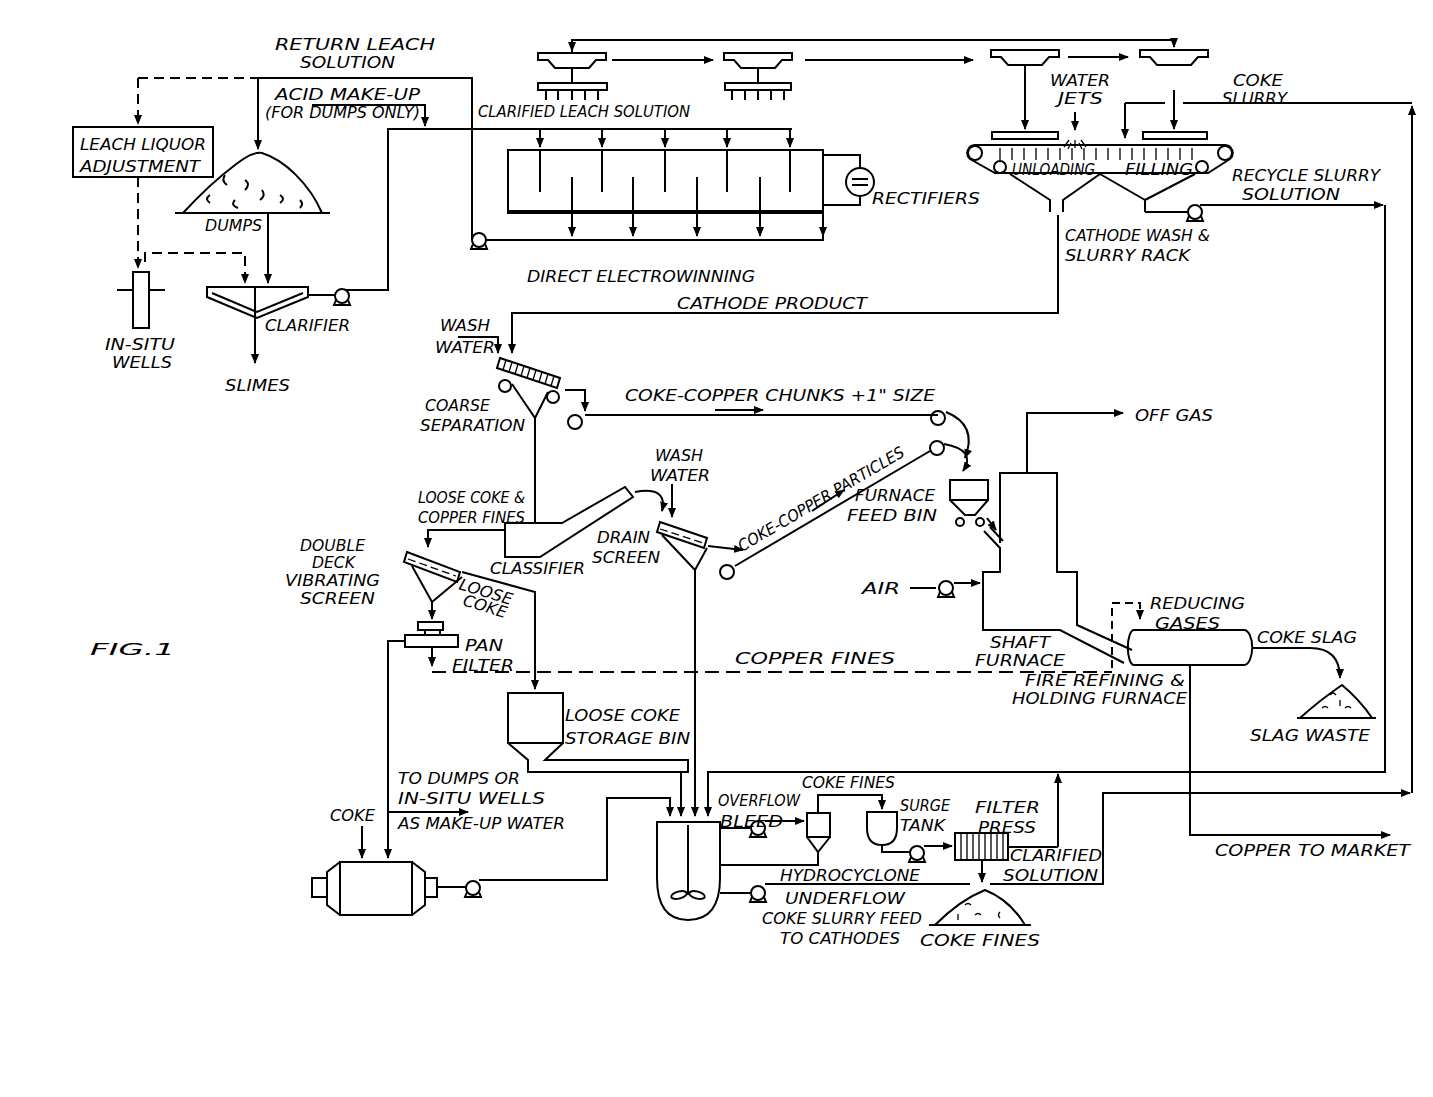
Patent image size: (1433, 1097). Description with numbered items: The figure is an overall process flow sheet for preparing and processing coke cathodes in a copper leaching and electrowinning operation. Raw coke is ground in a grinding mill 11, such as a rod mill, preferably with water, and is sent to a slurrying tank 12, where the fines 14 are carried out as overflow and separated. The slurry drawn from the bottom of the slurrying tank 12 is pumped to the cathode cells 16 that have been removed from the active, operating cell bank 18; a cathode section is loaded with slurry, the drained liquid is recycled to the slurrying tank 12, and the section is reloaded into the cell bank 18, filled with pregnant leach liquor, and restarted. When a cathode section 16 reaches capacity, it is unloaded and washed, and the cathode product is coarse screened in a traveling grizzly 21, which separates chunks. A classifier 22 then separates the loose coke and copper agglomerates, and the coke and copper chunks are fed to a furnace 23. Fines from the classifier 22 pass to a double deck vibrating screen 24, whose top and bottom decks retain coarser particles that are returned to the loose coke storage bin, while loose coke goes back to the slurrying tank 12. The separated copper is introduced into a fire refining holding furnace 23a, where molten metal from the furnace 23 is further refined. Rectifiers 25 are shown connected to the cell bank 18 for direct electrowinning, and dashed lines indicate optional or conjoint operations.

The grinding mill 11 is at (393, 908).
The slurrying tank 12 is at (657, 893).
The fines 14 is at (1010, 912).
The cathode cells 16 is at (607, 88).
The cell bank 18 is at (802, 150).
The traveling grizzly 21 is at (560, 381).
The classifier 22 is at (583, 515).
The furnace 23 is at (1058, 542).
The fire refining holding furnace 23a is at (1229, 668).
The double deck vibrating screen 24 is at (425, 580).
The rectifiers 25 is at (868, 170).